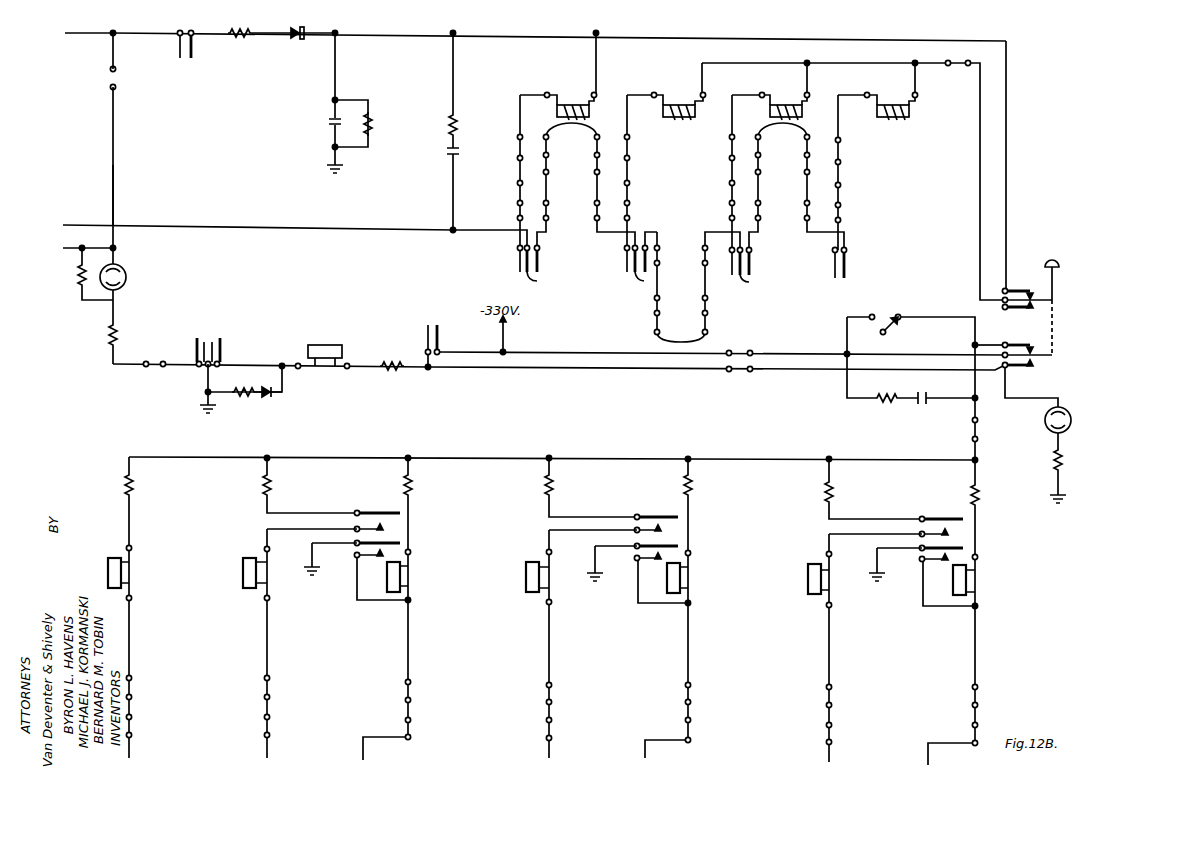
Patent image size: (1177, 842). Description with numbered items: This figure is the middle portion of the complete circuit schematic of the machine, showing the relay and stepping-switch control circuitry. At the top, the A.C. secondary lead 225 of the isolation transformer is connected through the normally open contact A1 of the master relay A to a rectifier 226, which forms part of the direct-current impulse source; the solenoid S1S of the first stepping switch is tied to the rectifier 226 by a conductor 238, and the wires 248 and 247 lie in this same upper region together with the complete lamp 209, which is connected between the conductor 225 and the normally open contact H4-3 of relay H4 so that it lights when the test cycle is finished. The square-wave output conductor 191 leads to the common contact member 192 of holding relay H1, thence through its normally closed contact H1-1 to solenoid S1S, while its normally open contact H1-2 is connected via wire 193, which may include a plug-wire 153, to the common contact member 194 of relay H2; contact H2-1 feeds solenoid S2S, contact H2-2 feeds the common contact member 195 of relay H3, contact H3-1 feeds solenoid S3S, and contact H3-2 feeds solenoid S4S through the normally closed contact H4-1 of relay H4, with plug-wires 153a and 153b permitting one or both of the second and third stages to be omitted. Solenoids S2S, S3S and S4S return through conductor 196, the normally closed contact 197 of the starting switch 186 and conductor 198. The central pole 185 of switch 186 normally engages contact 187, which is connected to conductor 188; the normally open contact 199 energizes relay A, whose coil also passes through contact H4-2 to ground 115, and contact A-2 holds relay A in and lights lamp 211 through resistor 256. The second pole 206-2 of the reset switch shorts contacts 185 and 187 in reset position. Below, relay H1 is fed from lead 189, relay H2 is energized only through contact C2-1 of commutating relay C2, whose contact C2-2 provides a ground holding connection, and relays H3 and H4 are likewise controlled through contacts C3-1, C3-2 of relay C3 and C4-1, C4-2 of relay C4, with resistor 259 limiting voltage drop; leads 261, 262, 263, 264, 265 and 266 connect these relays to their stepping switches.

The secondary lead 225 is at (88, 35).
The normally open contact of relay A A1 is at (186, 58).
The rectifier 226 is at (296, 40).
The conductor 248 is at (114, 165).
The output conductor 191 is at (80, 224).
The conductor 247 is at (66, 250).
The complete lamp 209 is at (126, 277).
The normally open contact of relay H4 H4-3 is at (197, 338).
The normally closed contact of relay H4 H4-2 is at (222, 340).
The master relay A is at (325, 345).
The normally open contact of relay A A-2 is at (420, 336).
The ground 115 is at (212, 410).
The conductor 238 is at (606, 52).
The conductor 196 is at (850, 50).
The conductor 198 is at (1008, 90).
The solenoid of stepping switch S1 S1S is at (570, 105).
The solenoid of stepping switch S2 S2S is at (676, 105).
The solenoid of stepping switch S3 S3S is at (783, 105).
The solenoid of stepping switch S4 S4S is at (890, 105).
The plug-wire 153 is at (575, 130).
The wire 193 is at (547, 195).
The plug-wire 153b is at (785, 130).
The plug-wire 153a is at (660, 340).
The normally closed contact of relay H1 H1-1 is at (524, 262).
The normally open contact of relay H1 H1-2 is at (540, 262).
The common contact member 192 is at (538, 281).
The normally closed contact of relay H2 H2-1 is at (631, 262).
The normally open contact of relay H2 H2-2 is at (645, 280).
The common contact member 194 is at (640, 283).
The normally closed contact of relay H3 H3-1 is at (735, 278).
The normally open contact of relay H3 H3-2 is at (751, 272).
The common contact member 195 is at (750, 282).
The normally closed contact of relay H4 H4-1 is at (840, 280).
The normally closed contact of starting switch 197 is at (1022, 290).
The starting switch 186 is at (1054, 260).
The contact 187 is at (1022, 334).
The central pole 185 is at (1052, 357).
The normally open contact 199 is at (1030, 368).
The second pole of reset switch 206-2 is at (892, 328).
The lamp 211 is at (1071, 423).
The resistor 256 is at (1062, 462).
The conductor 188 is at (614, 457).
The resistor 259 is at (978, 495).
The single-pole double-throw relay H1 is at (124, 570).
The lead 189 is at (130, 745).
The single-pole double-throw relay H2 is at (243, 570).
The normally open contact of relay C2 C2-1 is at (388, 510).
The normally open contact of relay C2 C2-2 is at (350, 548).
The relay C2 is at (400, 574).
The output conductor 262 is at (364, 748).
The output conductor 261 is at (268, 745).
The relay H3 is at (526, 575).
The normally open contact of relay C3 C3-1 is at (666, 514).
The normally open contact of relay C3 C3-2 is at (630, 552).
The commutating relay C3 is at (680, 576).
The output conductor 264 is at (646, 748).
The output conductor 263 is at (550, 748).
The relay H4 is at (808, 576).
The normally open contact of relay C4 C4-1 is at (952, 516).
The normally open contact of relay C4 C4-2 is at (915, 554).
The commutating relay C4 is at (966, 580).
The output conductor 266 is at (929, 752).
The output conductor 265 is at (830, 752).